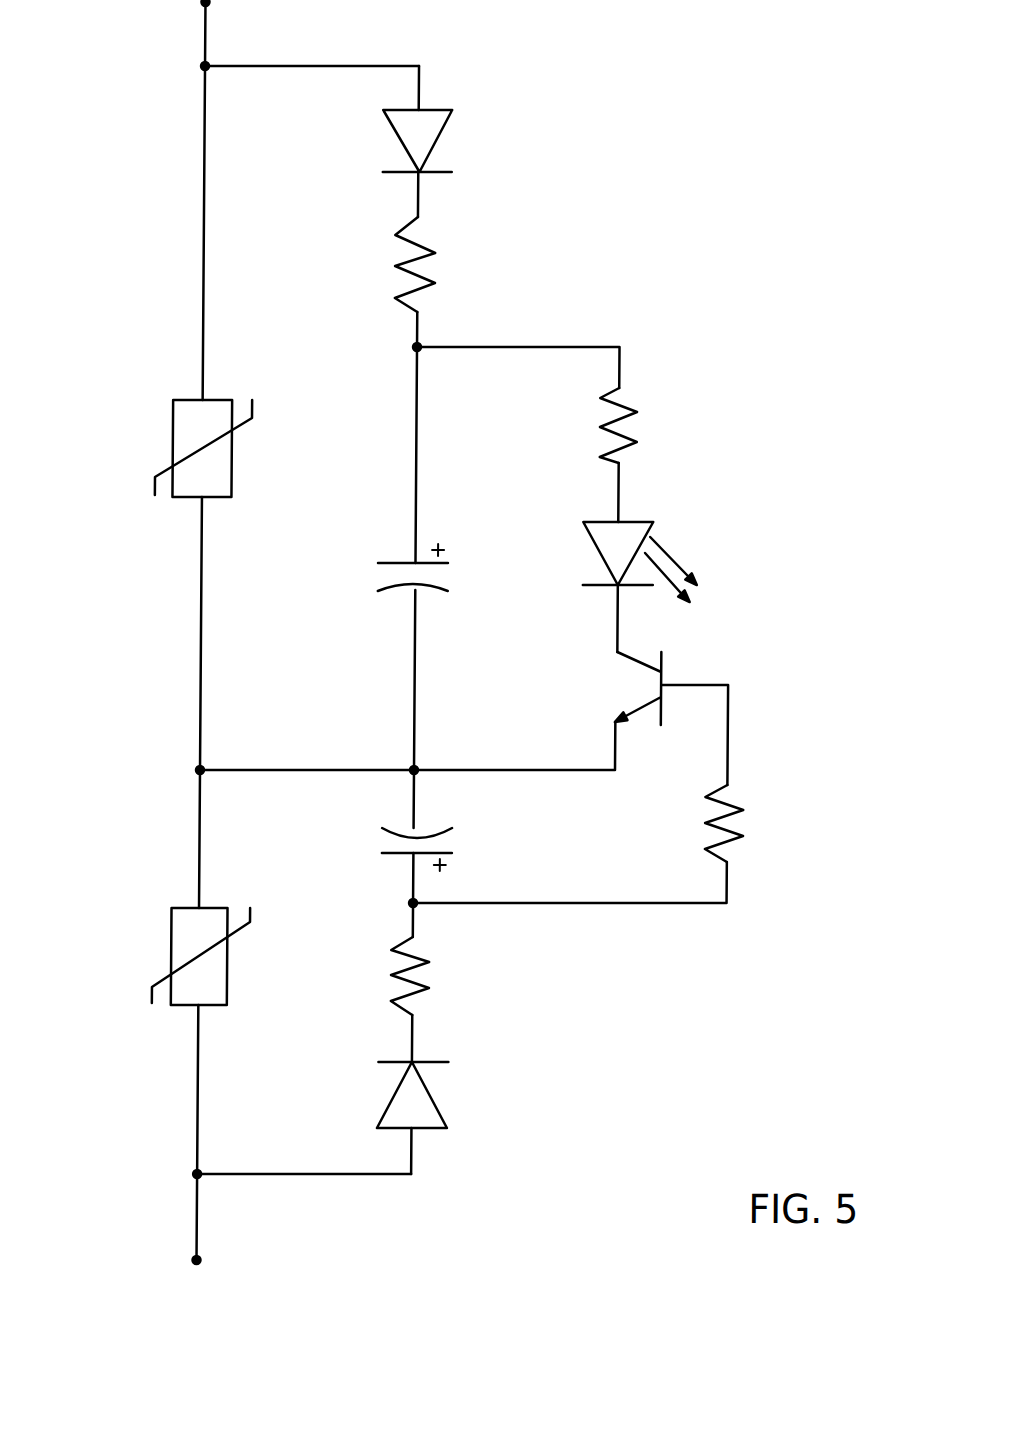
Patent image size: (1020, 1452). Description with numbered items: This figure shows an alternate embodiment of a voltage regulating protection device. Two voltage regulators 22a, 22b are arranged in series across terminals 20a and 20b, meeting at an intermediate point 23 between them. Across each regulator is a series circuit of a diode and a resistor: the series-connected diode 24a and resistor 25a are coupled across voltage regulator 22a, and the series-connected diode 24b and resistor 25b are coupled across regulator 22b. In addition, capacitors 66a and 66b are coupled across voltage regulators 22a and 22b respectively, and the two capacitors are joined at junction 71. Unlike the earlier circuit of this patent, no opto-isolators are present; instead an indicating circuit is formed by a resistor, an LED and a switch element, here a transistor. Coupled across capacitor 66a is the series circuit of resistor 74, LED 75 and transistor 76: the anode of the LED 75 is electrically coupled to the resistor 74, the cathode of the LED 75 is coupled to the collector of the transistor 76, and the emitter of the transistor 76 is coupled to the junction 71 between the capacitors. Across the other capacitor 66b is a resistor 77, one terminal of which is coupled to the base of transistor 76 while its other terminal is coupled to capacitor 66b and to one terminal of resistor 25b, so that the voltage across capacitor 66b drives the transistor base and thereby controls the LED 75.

The terminal 20a is at (206, 25).
The terminal 20b is at (206, 1230).
The voltage regulator 22a is at (176, 433).
The voltage regulator 22b is at (179, 937).
The midpoint node between varistors 23 is at (205, 770).
The diode 24a is at (441, 133).
The diode 24b is at (446, 1110).
The resistor 25a is at (437, 253).
The resistor 25b is at (436, 988).
The capacitor 66a is at (401, 562).
The capacitor 66b is at (398, 853).
The junction 71 is at (419, 770).
The resistor 74 is at (636, 414).
The LED 75 is at (657, 522).
The transistor 76 is at (667, 655).
The resistor 77 is at (749, 812).